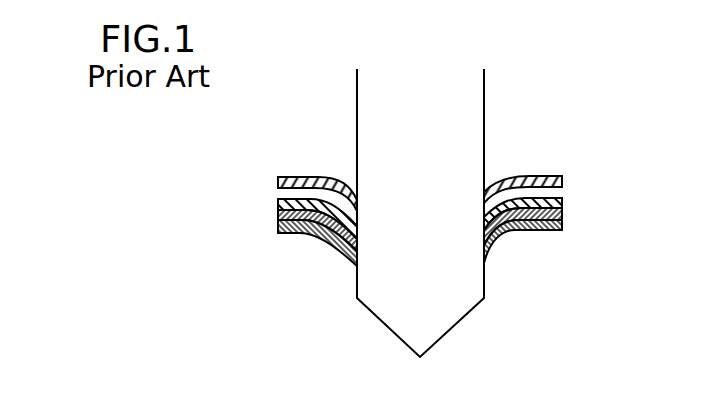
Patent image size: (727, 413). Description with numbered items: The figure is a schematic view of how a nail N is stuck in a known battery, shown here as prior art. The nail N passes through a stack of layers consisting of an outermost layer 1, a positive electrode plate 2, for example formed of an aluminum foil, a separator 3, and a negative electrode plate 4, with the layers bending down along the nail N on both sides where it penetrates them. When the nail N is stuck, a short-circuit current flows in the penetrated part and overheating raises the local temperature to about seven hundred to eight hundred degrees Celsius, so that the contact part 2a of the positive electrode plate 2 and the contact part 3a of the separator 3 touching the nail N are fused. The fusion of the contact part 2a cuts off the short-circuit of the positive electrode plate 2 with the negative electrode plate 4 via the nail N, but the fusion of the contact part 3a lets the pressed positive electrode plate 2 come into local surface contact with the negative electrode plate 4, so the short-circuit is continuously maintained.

The nail N is at (466, 104).
The outer layer 1 is at (562, 183).
The positive electrode plate 2 is at (562, 203).
The separator 3 is at (562, 212).
The negative electrode plate 4 is at (562, 225).
The contact part of the positive electrode plate 2a is at (357, 230).
The contact part of the separator 3a is at (357, 243).